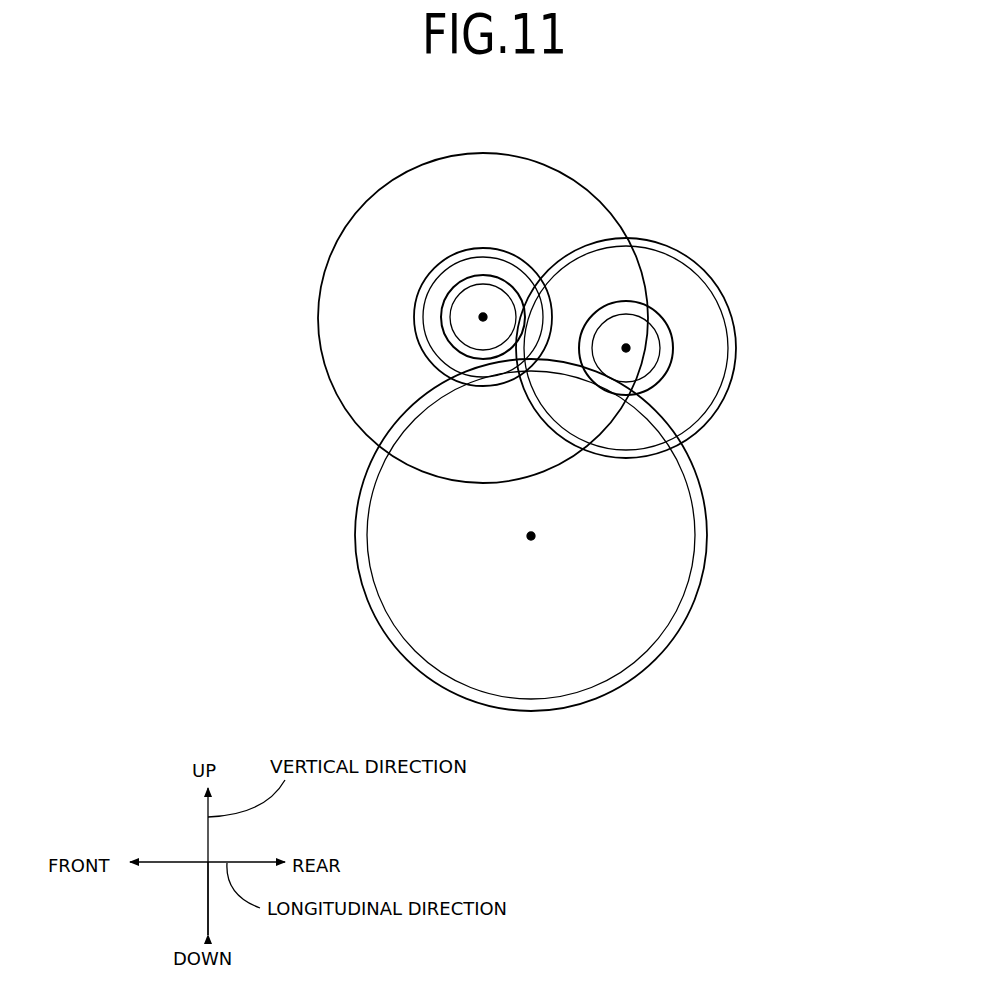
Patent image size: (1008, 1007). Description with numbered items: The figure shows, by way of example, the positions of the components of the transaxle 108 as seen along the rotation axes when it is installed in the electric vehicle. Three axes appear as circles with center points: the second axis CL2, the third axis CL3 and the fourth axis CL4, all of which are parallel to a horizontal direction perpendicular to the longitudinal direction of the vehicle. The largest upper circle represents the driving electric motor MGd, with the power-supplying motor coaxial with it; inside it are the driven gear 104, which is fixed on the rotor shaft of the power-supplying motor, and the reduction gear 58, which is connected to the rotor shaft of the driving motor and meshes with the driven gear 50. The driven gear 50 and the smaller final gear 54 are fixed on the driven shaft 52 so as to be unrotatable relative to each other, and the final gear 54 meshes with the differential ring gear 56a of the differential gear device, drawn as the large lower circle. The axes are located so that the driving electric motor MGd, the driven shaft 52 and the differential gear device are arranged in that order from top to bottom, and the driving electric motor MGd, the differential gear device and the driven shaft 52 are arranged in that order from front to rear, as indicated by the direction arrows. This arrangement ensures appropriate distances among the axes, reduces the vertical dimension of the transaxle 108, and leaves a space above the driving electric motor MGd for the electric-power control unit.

The transaxle 108 is at (773, 125).
The driving electric motor MGd is at (417, 163).
The driven gear 104 is at (462, 252).
The reduction gear 58 is at (445, 298).
The third axis CL3 is at (483, 317).
The driven gear 50 is at (708, 272).
The driven shaft 52 is at (675, 319).
The final gear 54 is at (632, 301).
The second axis CL2 is at (626, 348).
The differential ring gear 56a is at (362, 478).
The fourth axis CL4 is at (531, 536).